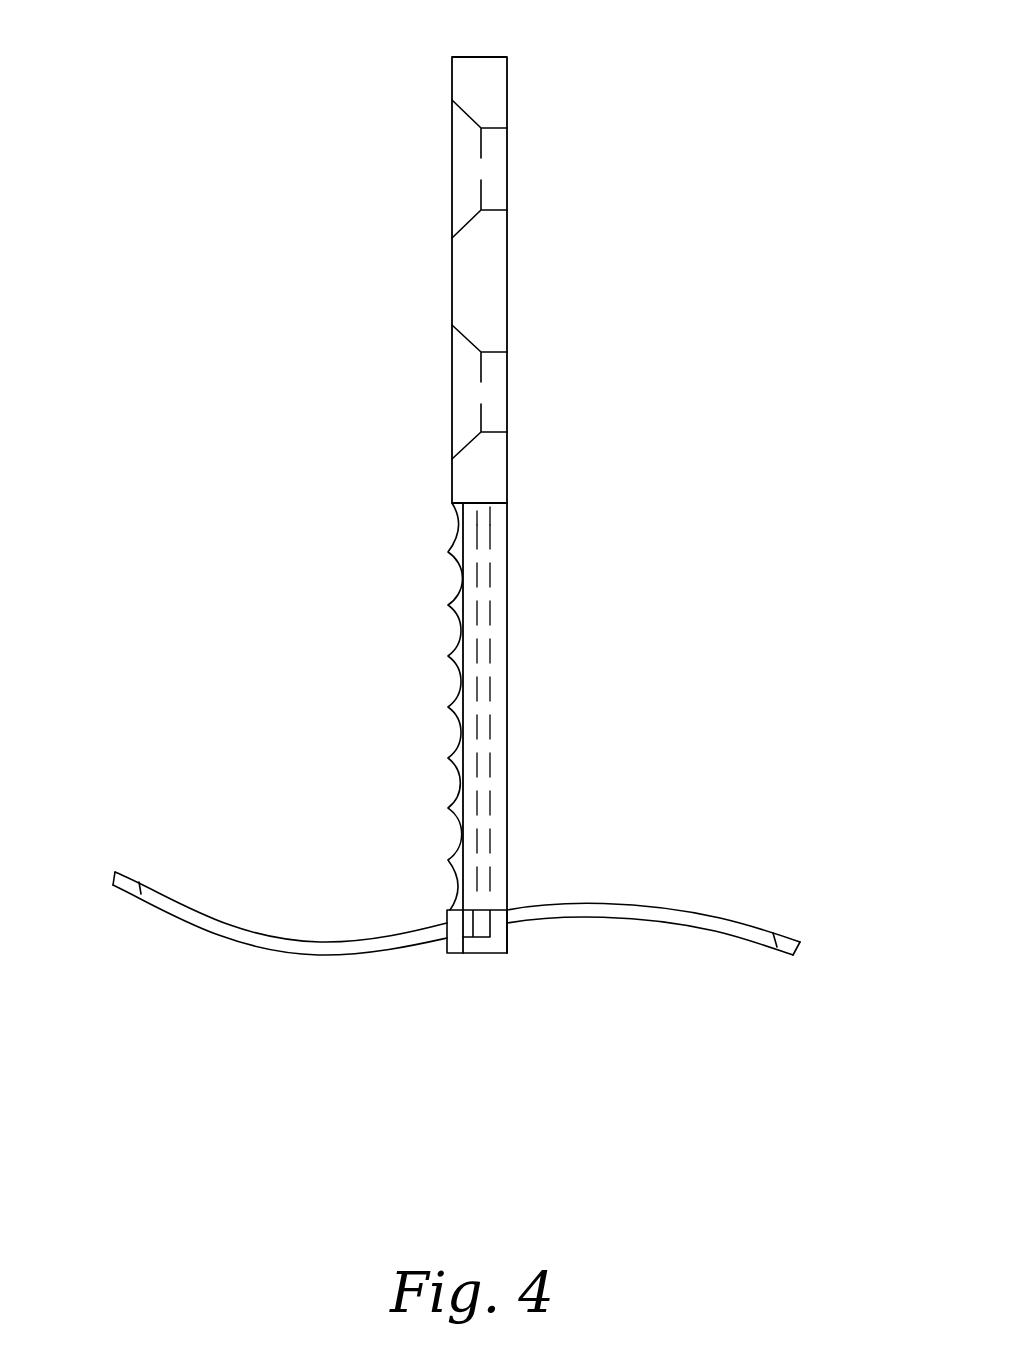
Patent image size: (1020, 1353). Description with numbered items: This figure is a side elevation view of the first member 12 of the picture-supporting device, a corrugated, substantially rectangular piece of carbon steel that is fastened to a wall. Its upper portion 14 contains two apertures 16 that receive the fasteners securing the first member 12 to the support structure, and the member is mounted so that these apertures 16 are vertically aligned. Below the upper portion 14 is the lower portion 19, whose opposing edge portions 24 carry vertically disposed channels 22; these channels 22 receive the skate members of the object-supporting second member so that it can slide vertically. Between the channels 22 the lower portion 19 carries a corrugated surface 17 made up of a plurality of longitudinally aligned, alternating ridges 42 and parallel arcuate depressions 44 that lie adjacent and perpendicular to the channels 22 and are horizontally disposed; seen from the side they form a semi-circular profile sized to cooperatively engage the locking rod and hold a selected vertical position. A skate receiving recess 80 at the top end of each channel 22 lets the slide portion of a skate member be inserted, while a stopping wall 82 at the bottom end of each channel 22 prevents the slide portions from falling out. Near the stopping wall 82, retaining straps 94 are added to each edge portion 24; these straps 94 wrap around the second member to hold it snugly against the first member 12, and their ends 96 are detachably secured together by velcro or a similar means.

The first member 12 is at (507, 57).
The upper portion 14 is at (452, 282).
The apertures 16 is at (460, 162).
The corrugated surface 17 is at (415, 540).
The lower portion 19 is at (508, 580).
The channels 22 is at (480, 673).
The edge portions 24 is at (496, 773).
The ridges 42 is at (448, 758).
The arcuate depressions 44 is at (460, 628).
The skate receiving recess 80 is at (470, 513).
The stopping wall 82 is at (472, 938).
The retaining straps 94 is at (195, 912).
The ends 96 is at (127, 883).